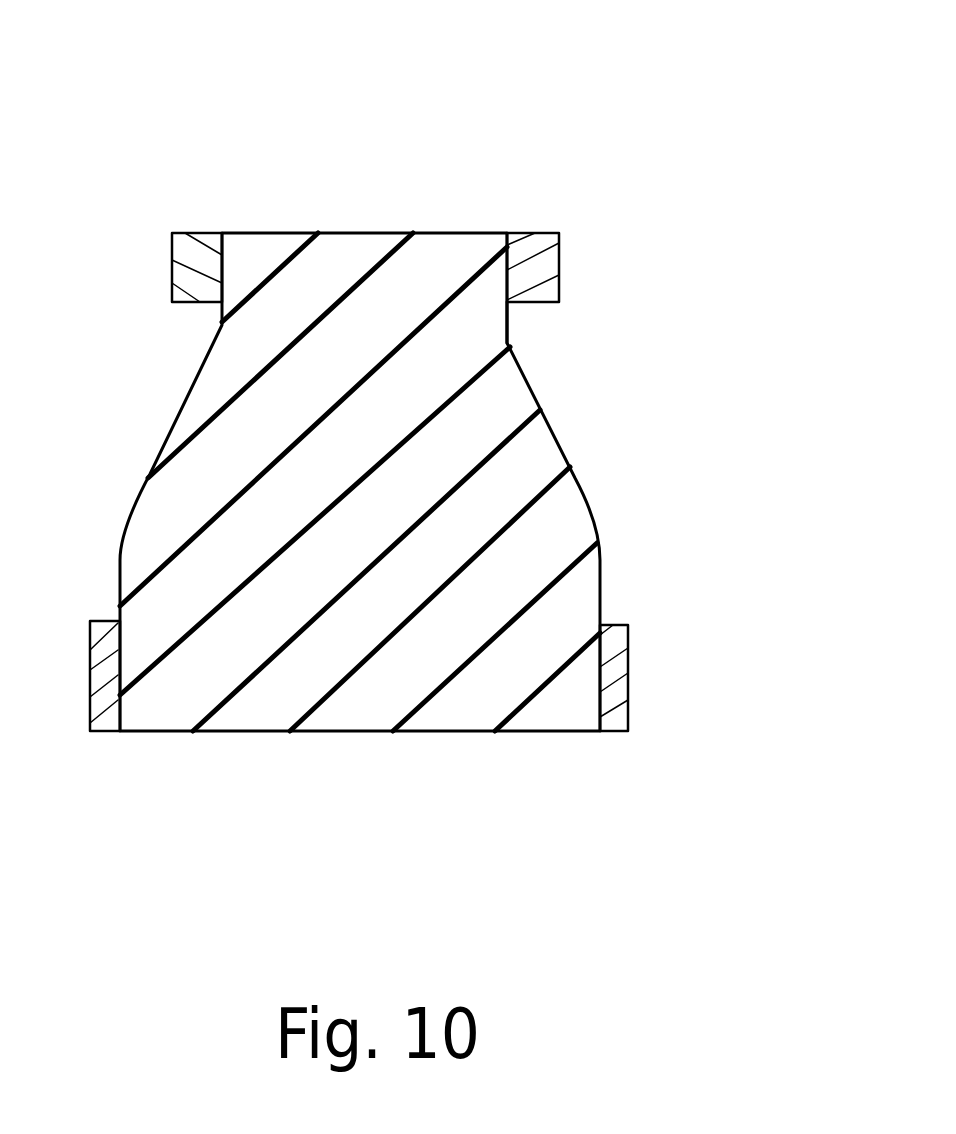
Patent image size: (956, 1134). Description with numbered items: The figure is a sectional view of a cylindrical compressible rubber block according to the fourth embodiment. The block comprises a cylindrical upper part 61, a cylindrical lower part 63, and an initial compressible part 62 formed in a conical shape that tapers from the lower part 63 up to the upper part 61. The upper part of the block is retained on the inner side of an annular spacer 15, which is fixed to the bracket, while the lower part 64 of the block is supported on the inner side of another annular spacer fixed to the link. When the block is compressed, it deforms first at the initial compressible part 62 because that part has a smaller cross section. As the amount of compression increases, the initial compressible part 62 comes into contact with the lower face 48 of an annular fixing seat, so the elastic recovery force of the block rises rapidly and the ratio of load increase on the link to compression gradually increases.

The annular spacer 15 is at (527, 233).
The lower face 48 is at (537, 305).
The cylindrical upper part 61 is at (347, 253).
The initial compressible part 62 is at (512, 402).
The cylindrical lower part 63 is at (573, 588).
The lower part 64 is at (477, 690).